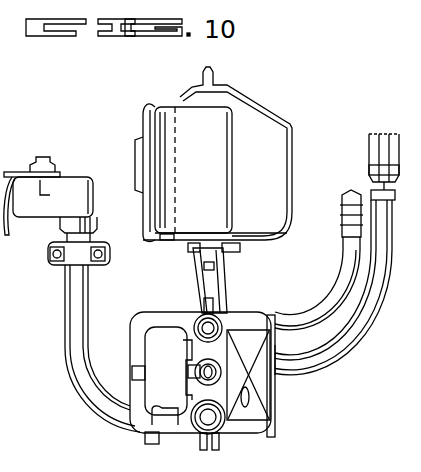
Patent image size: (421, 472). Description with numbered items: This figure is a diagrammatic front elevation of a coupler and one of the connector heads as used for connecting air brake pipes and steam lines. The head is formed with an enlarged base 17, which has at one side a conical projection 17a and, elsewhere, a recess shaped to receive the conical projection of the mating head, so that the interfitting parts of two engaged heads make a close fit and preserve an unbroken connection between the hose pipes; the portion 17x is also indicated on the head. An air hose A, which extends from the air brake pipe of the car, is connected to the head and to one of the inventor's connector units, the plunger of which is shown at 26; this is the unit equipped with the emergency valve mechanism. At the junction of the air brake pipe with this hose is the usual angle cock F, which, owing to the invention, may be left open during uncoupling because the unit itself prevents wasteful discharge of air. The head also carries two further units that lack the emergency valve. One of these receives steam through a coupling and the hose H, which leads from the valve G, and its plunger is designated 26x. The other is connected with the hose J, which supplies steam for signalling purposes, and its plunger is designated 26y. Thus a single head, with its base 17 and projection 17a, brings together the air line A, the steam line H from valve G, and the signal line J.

The enlarged base 17 is at (190, 314).
The conical projection 17a is at (273, 351).
The housing portion 17x is at (413, 341).
The plunger 26 is at (212, 365).
The plunger 26x is at (215, 420).
The plunger 26y is at (230, 318).
The valve G is at (80, 172).
The hose H is at (65, 305).
The angle cock F is at (370, 152).
The hose J is at (340, 262).
The flexible hose A is at (318, 363).